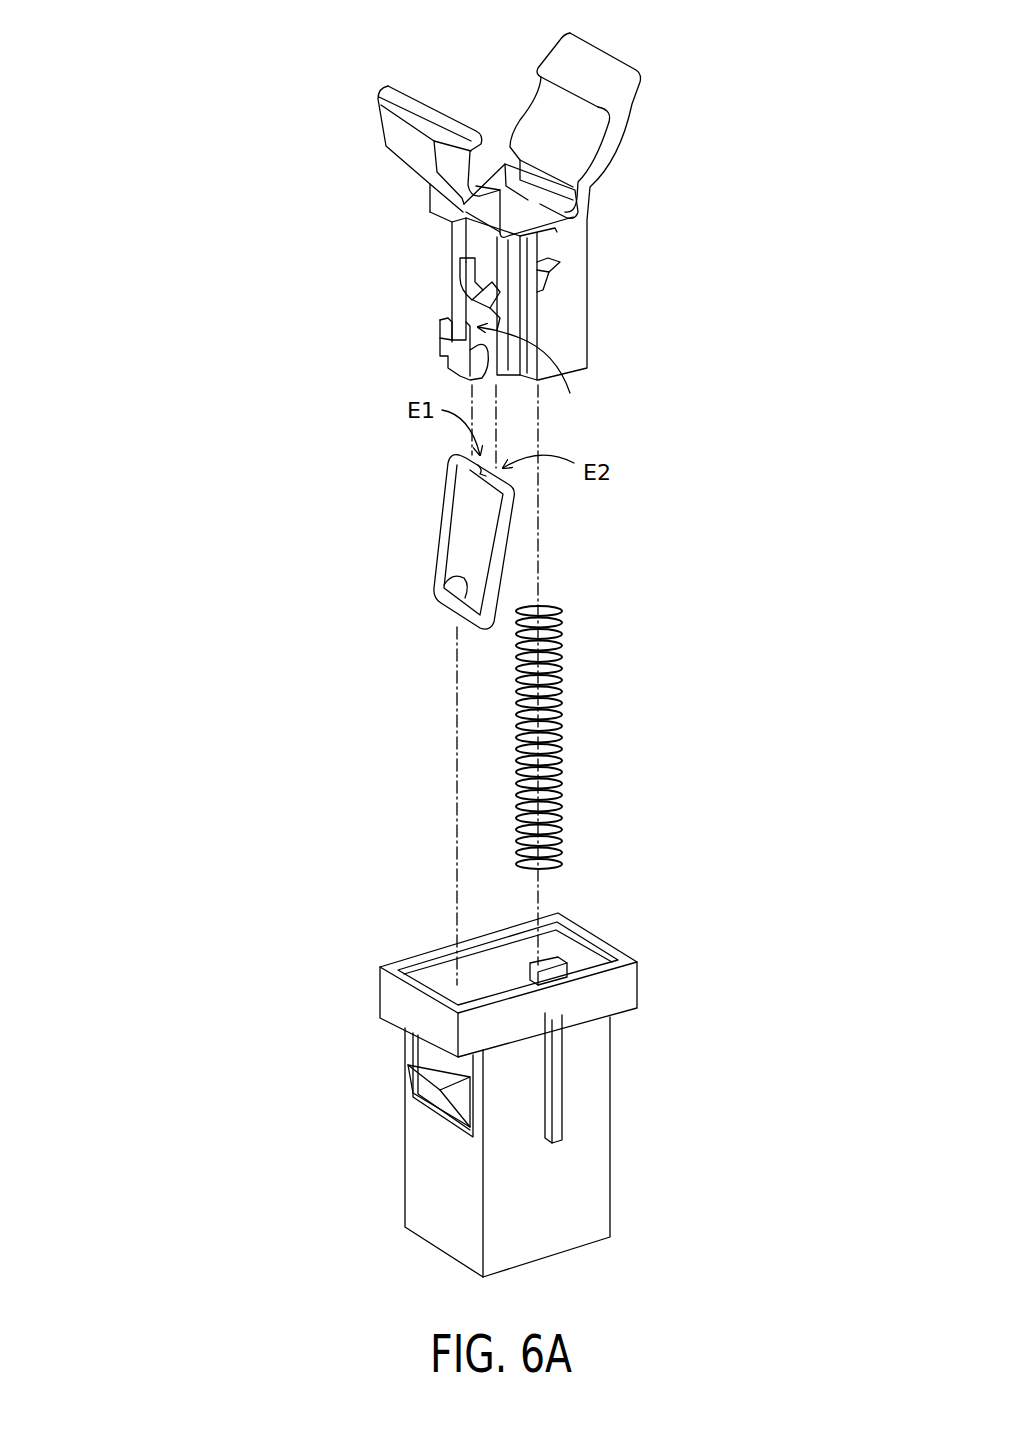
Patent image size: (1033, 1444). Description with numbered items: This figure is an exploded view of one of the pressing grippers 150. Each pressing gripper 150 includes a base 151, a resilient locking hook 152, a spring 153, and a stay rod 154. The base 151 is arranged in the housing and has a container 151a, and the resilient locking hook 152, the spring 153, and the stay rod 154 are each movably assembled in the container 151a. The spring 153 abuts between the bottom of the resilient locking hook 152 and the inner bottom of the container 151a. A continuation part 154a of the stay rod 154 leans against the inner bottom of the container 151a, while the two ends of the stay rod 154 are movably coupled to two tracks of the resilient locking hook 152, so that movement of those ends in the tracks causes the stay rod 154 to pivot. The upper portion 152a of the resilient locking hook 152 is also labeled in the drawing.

The pressing gripper 150 is at (213, 56).
The base 151 is at (640, 1125).
The container 151a is at (497, 968).
The resilient locking hook 152 is at (606, 281).
The clamping arms 152a is at (566, 66).
The spring 153 is at (565, 728).
The stay rod 154 is at (427, 513).
The continuation part 154a is at (443, 572).